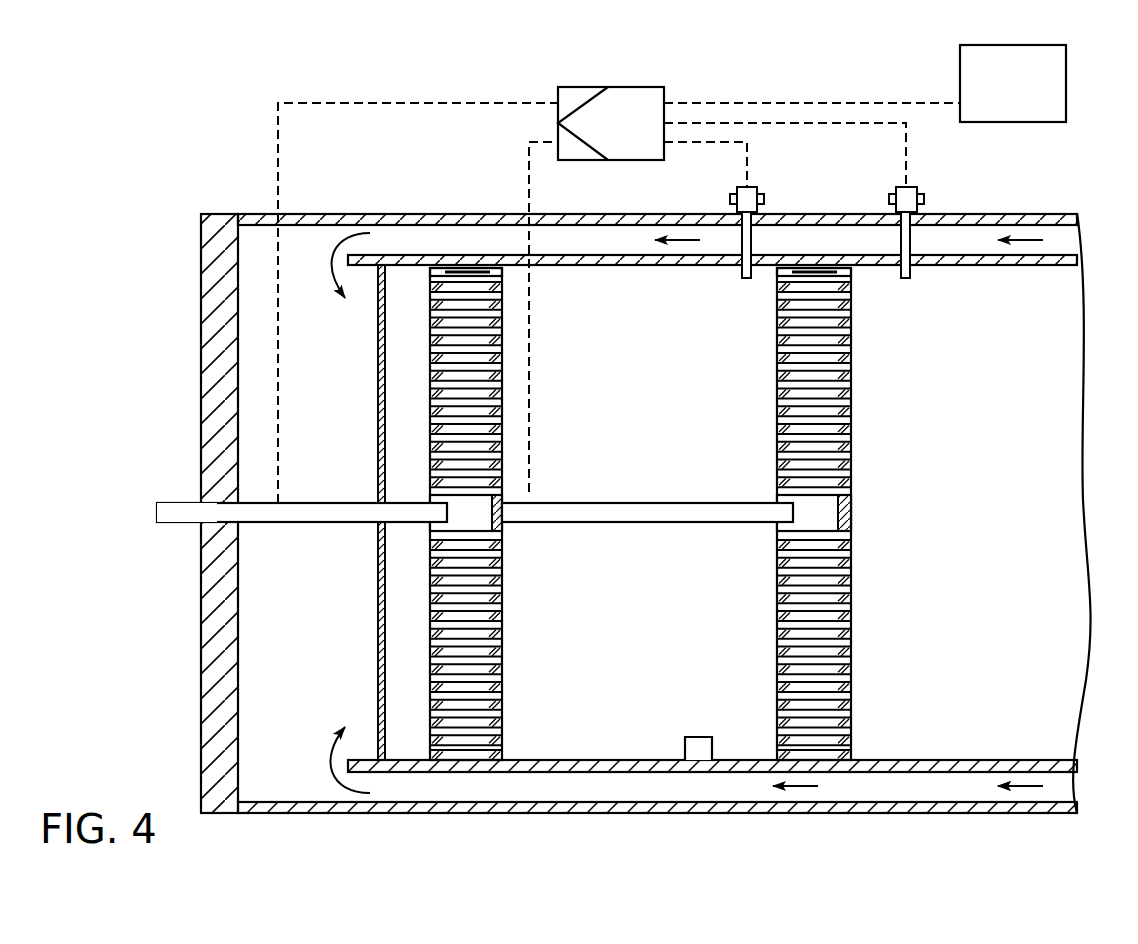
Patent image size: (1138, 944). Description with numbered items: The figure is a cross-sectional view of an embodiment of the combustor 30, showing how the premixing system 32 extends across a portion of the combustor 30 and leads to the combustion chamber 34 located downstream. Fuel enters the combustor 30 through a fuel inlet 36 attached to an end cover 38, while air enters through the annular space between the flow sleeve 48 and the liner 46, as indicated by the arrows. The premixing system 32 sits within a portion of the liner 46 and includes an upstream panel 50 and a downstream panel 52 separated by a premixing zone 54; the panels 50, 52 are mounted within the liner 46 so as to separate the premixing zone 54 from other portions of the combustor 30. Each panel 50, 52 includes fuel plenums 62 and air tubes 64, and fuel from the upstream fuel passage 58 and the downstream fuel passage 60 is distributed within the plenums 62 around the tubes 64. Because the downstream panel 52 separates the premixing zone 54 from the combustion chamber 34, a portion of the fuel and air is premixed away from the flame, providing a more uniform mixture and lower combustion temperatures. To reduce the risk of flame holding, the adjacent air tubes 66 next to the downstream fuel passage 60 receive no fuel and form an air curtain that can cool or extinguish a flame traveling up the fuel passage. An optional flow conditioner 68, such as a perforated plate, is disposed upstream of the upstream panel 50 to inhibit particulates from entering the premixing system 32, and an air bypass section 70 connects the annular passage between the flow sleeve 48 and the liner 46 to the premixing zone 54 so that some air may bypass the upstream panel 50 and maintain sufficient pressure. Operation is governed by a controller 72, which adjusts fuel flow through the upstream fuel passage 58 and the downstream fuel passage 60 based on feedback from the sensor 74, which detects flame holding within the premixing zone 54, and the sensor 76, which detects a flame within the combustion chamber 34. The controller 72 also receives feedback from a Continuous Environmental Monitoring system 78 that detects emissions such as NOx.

The combustor 30 is at (248, 116).
The premixing system 32 is at (712, 571).
The combustion chamber 34 is at (1048, 718).
The fuel inlet 36 is at (157, 512).
The end cover 38 is at (224, 214).
The liner 46 is at (1047, 813).
The flow sleeve 48 is at (430, 822).
The upstream panel 50 is at (430, 707).
The downstream panel 52 is at (851, 712).
The premixing zone 54 is at (573, 735).
The upstream fuel passage 58 is at (287, 516).
The downstream fuel passage 60 is at (648, 503).
The fuel plenums 62 is at (654, 514).
The air tubes 64 is at (430, 278).
The adjacent air tubes 66 is at (503, 531).
The flow conditioner 68 is at (378, 642).
The air bypass section 70 is at (685, 737).
The controller 72 is at (642, 87).
The sensor 74 is at (758, 195).
The sensor 76 is at (917, 195).
The Continuous Environmental Monitoring (CEM) system 78 is at (1067, 82).